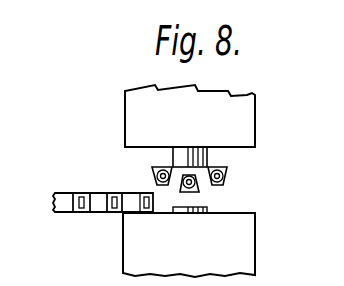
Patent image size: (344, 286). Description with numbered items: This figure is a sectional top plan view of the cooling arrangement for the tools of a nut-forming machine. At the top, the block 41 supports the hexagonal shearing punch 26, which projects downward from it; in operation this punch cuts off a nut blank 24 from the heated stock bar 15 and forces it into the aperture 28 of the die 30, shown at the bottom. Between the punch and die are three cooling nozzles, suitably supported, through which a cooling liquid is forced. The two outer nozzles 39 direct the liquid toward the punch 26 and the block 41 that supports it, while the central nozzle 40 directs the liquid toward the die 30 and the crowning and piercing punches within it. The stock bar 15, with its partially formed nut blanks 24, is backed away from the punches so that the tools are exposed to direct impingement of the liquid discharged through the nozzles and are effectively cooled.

The block 41 is at (245, 122).
The punch 26 is at (182, 147).
The nozzles 39 is at (152, 172).
The nozzle 40 is at (200, 189).
The bar 15 is at (68, 214).
The nut blanks 24 is at (97, 213).
The die 30 is at (245, 236).
The aperture 28 is at (178, 215).